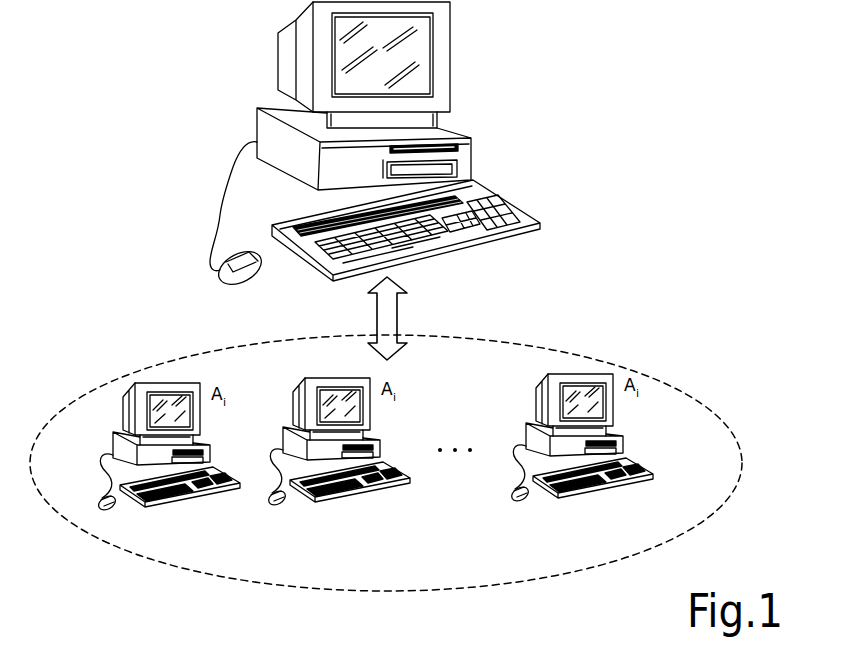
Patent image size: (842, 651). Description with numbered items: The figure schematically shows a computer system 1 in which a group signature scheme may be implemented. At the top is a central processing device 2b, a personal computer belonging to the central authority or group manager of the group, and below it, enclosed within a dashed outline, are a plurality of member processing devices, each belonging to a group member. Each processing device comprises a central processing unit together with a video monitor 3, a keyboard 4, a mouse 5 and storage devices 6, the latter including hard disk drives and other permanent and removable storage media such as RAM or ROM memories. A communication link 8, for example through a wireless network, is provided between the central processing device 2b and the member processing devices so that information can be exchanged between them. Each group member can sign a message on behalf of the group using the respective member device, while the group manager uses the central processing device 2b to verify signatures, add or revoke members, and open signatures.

The computer system 1 is at (626, 286).
The central processing device 2b is at (235, 111).
The video monitor 3 is at (450, 62).
The keyboard 4 is at (510, 203).
The mouse 5 is at (218, 273).
The storage devices 6 is at (453, 148).
The communication link 8 is at (397, 315).